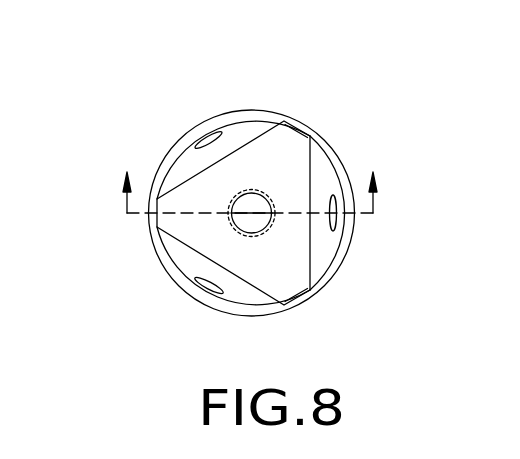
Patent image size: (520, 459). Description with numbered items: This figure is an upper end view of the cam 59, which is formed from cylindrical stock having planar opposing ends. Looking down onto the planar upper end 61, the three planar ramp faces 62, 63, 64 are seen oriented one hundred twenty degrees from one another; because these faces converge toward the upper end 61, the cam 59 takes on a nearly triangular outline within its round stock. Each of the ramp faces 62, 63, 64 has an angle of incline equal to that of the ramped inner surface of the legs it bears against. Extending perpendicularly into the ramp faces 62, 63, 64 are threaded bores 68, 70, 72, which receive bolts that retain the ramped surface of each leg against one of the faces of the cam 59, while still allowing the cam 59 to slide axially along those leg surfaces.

The cam 59 is at (266, 103).
The upper end 61 is at (298, 155).
The planar ramp face 62 is at (327, 255).
The planar ramp face 63 is at (180, 262).
The planar ramp face 64 is at (180, 157).
The threaded bore 68 is at (335, 225).
The threaded bore 70 is at (203, 287).
The threaded bore 72 is at (214, 134).